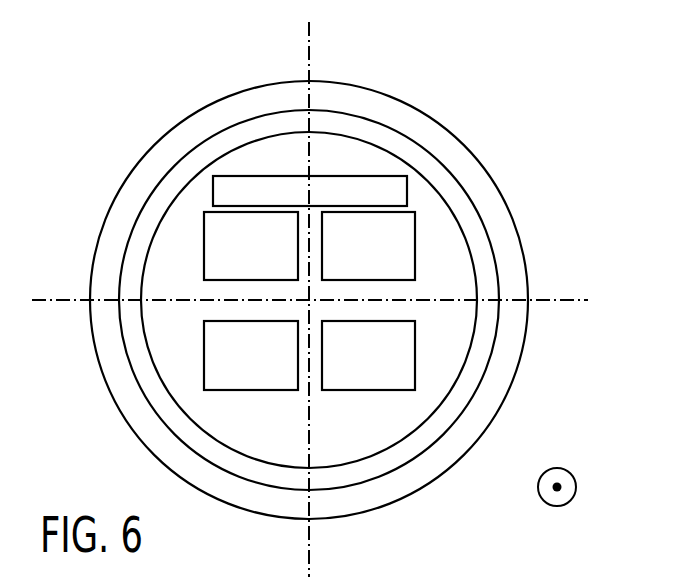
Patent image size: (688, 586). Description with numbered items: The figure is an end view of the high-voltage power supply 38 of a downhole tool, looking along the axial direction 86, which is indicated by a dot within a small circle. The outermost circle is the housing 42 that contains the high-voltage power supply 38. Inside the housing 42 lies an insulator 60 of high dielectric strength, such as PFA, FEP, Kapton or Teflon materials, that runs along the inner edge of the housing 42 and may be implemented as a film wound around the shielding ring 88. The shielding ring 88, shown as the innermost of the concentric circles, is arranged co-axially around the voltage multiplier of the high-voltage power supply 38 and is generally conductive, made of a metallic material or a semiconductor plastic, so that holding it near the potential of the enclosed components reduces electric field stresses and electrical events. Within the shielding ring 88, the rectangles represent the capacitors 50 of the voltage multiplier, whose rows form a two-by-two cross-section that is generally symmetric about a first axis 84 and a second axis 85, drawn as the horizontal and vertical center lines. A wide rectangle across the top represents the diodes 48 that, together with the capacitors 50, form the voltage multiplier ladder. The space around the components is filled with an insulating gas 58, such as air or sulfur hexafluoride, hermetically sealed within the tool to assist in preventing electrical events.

The high-voltage power supply 38 is at (354, 165).
The housing 42 is at (195, 113).
The diodes 48 is at (407, 190).
The capacitors 50 is at (415, 243).
The insulating gas 58 is at (365, 437).
The insulator 60 is at (490, 398).
The first axis 84 is at (62, 300).
The second axis 85 is at (311, 52).
The axial direction 86 is at (560, 490).
The shielding ring 88 is at (485, 333).